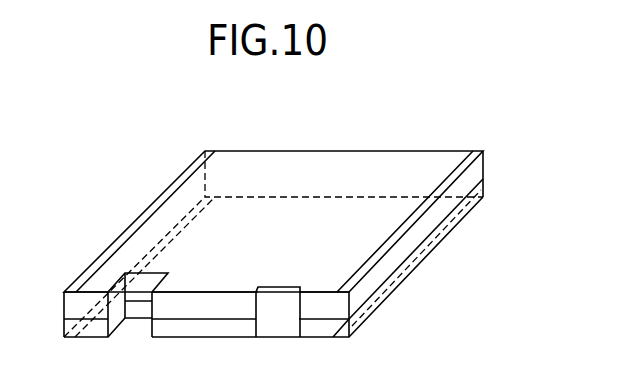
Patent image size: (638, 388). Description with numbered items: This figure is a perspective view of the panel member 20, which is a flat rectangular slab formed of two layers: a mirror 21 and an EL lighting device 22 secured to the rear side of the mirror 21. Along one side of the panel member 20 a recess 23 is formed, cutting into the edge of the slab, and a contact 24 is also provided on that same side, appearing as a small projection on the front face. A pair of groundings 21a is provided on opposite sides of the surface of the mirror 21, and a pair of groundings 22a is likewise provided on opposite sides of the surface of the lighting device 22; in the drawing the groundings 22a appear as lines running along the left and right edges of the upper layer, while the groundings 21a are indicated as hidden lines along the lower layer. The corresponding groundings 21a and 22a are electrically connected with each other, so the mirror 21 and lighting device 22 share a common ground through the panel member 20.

The panel member 20 is at (351, 149).
The mirror 21 is at (375, 307).
The groundings 21a is at (74, 338).
The EL lighting device 22 is at (478, 172).
The groundings 22a is at (199, 165).
The recess 23 is at (153, 308).
The contact 24 is at (278, 328).